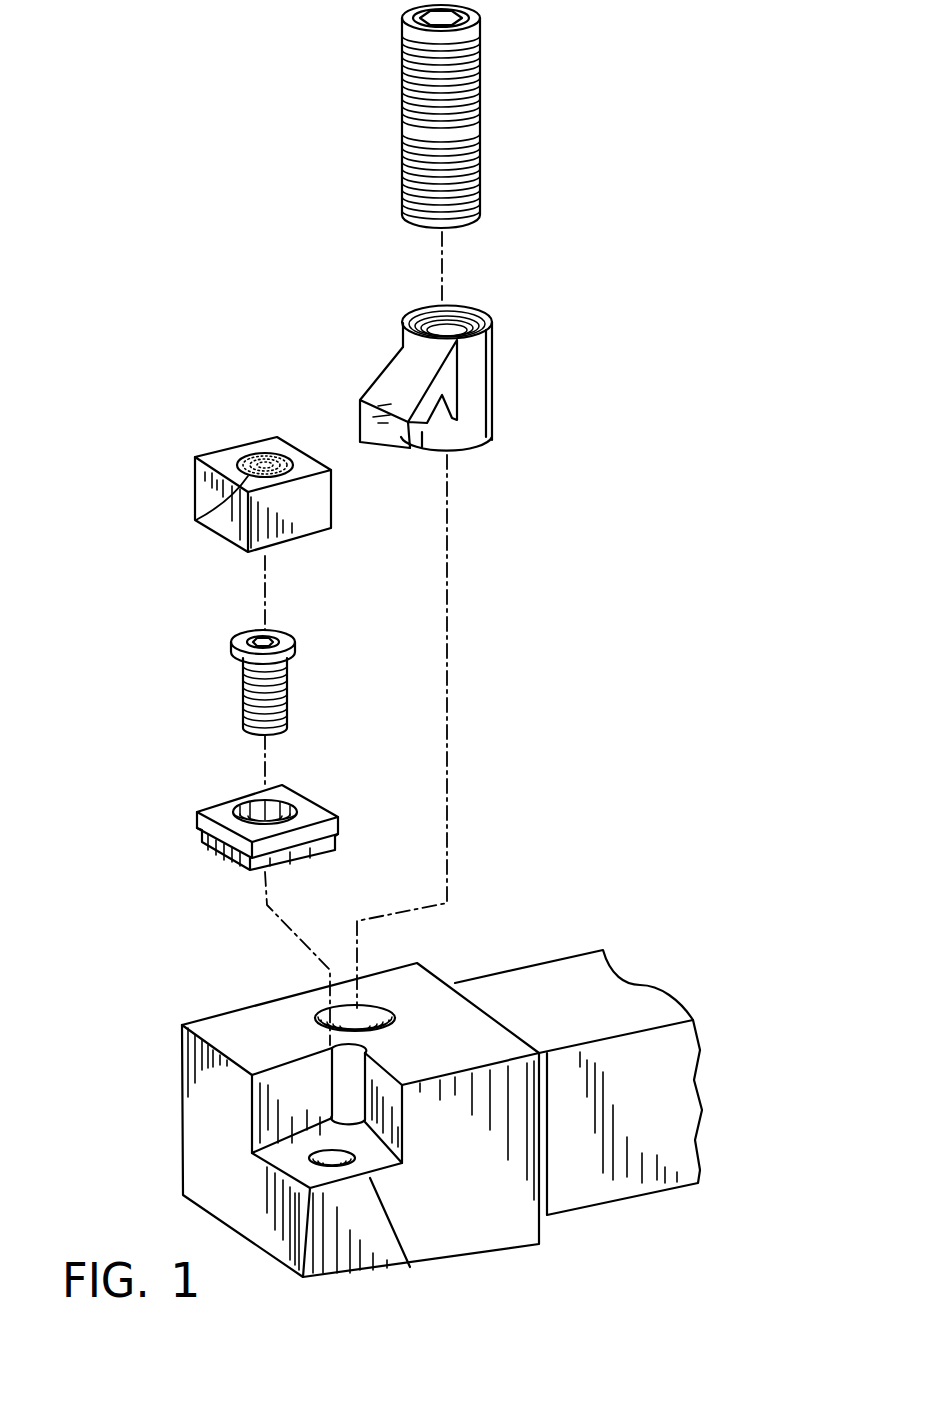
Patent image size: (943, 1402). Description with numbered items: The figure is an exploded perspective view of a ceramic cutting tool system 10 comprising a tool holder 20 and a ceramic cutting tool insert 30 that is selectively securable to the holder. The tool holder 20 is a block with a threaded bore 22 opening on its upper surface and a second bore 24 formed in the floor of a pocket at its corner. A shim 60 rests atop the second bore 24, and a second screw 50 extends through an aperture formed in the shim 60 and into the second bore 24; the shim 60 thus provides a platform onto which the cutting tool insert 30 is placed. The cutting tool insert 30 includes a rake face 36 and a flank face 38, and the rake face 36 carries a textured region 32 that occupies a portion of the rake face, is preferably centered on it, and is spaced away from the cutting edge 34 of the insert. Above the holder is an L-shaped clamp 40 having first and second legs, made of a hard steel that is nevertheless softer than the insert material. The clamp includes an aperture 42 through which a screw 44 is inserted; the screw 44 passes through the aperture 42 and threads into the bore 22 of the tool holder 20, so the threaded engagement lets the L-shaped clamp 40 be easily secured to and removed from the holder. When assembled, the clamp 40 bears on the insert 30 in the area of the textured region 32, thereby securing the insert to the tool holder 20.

The cutting tool system 10 is at (640, 553).
The tool holder 20 is at (424, 1092).
The bore 22 is at (382, 1000).
The second bore 24 is at (267, 1160).
The cutting tool insert 30 is at (242, 469).
The textured region 32 is at (240, 450).
The cutting edge 34 is at (197, 522).
The rake face 36 is at (307, 457).
The flank face 38 is at (308, 517).
The L-shaped clamp 40 is at (475, 351).
The aperture 42 is at (468, 320).
The screw 44 is at (480, 152).
The second screw 50 is at (243, 692).
The shim 60 is at (214, 805).